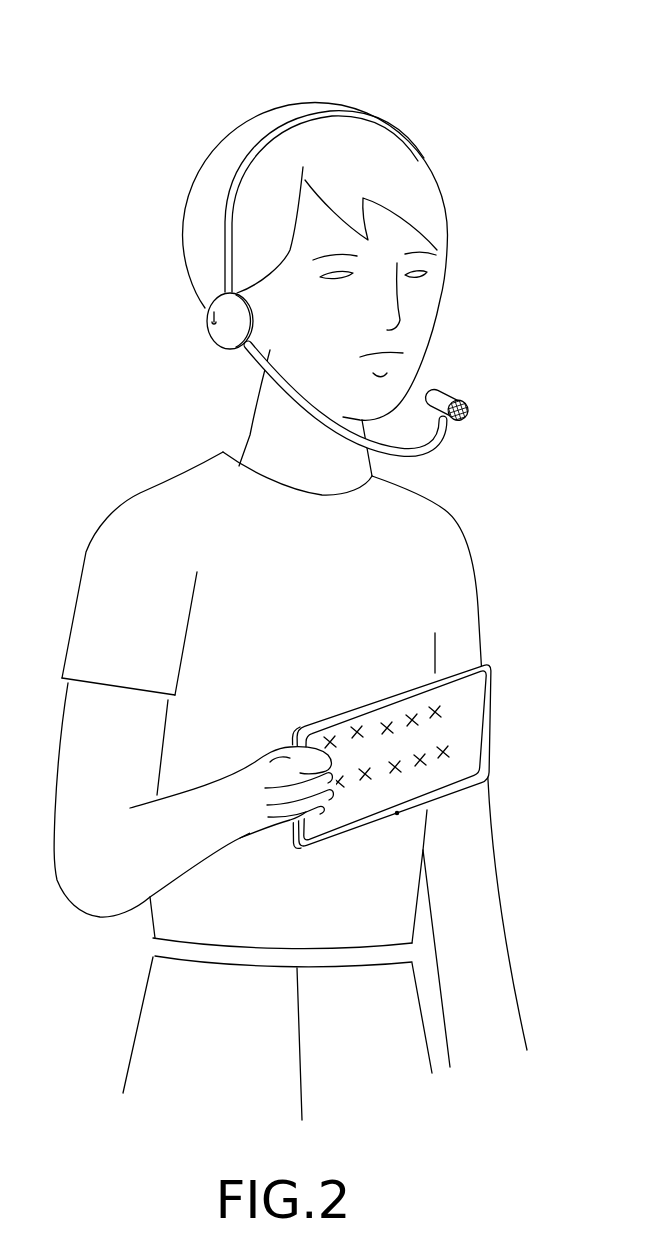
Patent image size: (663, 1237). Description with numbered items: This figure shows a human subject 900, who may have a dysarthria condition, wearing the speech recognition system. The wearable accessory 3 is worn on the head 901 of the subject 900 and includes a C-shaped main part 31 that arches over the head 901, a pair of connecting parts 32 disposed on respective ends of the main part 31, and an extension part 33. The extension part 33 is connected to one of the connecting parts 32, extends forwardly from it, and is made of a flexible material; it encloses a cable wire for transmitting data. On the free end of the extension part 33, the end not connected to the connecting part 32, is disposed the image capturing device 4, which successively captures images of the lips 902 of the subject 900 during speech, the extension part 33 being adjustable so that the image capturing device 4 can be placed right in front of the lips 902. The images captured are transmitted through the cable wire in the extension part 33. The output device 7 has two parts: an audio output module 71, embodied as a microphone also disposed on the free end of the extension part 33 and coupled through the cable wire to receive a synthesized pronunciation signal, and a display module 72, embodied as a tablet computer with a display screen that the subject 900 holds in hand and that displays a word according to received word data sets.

The wearable accessory 3 is at (353, 249).
The main part 31 is at (277, 141).
The connecting parts 32 is at (226, 338).
The extension part 33 is at (445, 440).
The image capturing device 4 is at (487, 370).
The audio output module 71 is at (445, 395).
The output device 7 is at (429, 777).
The display module 72 is at (492, 737).
The human subject 900 is at (193, 517).
The head 901 is at (410, 182).
The lips 902 is at (398, 347).